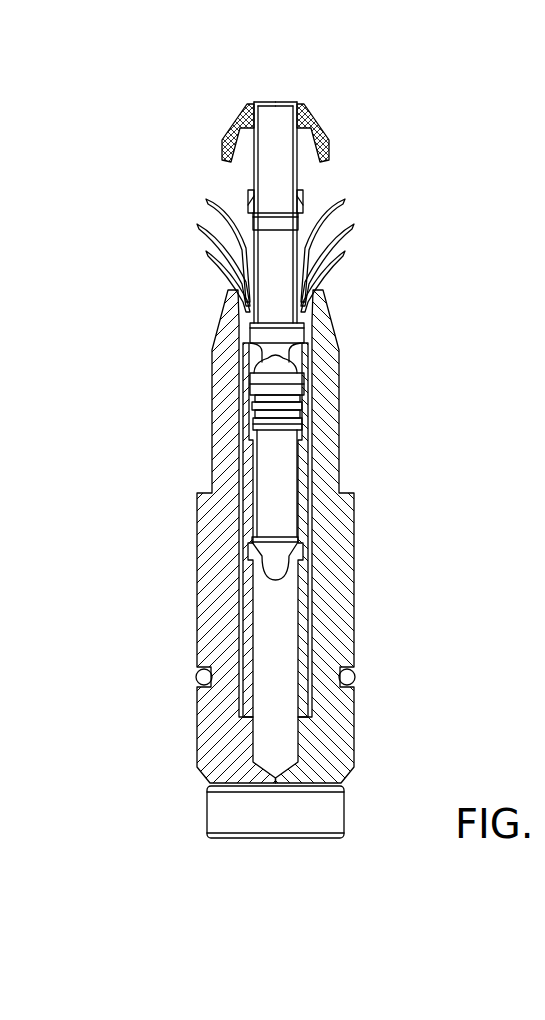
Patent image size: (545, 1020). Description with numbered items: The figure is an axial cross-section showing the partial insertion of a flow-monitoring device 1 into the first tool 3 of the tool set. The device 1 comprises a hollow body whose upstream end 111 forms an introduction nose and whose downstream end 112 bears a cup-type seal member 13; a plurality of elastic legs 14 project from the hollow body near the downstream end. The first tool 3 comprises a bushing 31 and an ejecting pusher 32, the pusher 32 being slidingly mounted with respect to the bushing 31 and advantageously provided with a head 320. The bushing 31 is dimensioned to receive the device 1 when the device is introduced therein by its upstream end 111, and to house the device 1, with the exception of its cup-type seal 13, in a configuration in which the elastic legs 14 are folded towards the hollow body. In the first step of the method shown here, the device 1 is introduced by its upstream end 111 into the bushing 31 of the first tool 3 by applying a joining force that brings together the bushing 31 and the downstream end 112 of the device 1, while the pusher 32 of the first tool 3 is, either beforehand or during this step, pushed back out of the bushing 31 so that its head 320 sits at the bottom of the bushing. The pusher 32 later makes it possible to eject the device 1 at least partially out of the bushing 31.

The flow-monitoring device 1 is at (174, 161).
The first tool 3 is at (70, 613).
The cup-type seal member 13 is at (331, 140).
The elastic legs 14 is at (368, 267).
The bushing 31 is at (205, 585).
The ejecting pusher 32 is at (250, 748).
The upstream end 111 is at (285, 520).
The downstream end 112 is at (255, 103).
The head 320 is at (222, 817).